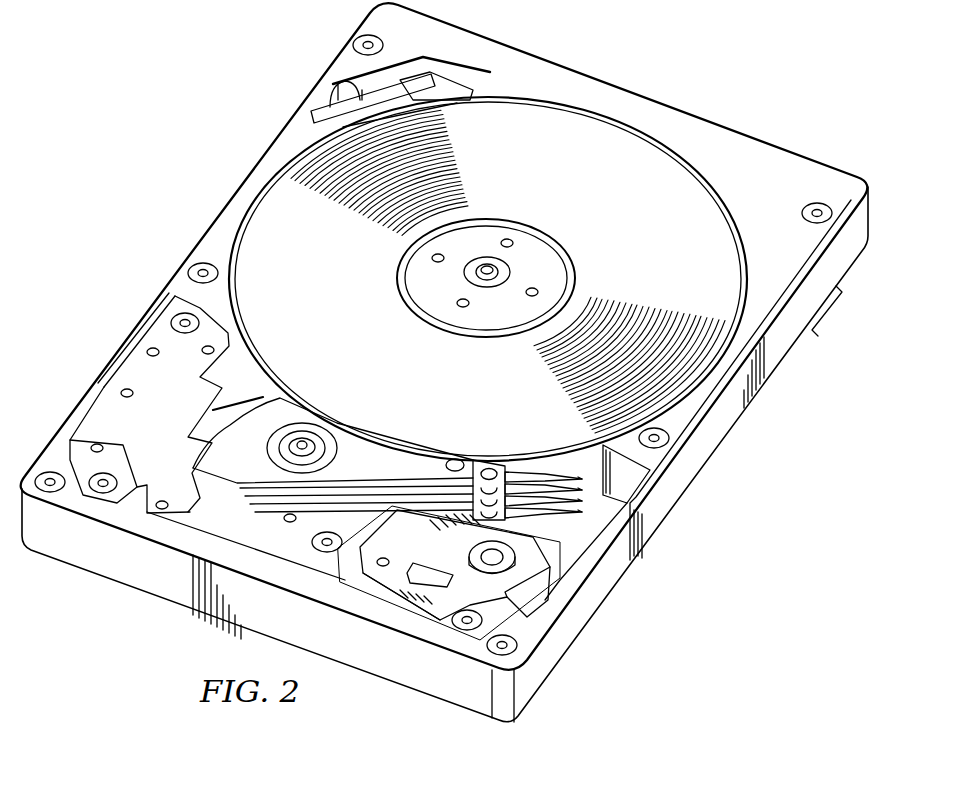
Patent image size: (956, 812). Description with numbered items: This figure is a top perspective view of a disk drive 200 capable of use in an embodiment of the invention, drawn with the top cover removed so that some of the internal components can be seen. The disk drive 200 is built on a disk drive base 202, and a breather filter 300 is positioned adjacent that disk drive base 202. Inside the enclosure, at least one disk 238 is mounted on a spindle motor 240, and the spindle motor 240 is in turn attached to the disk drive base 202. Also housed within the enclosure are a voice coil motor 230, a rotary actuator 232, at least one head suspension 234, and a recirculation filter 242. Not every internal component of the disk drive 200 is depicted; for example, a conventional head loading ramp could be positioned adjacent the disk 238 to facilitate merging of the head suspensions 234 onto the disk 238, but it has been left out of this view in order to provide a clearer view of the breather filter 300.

The disk drive 200 is at (652, 76).
The disk drive base 202 is at (770, 350).
The voice coil motor 230 is at (145, 368).
The rotary actuator 232 is at (378, 455).
The head suspension 234 is at (536, 477).
The disk 238 is at (339, 288).
The spindle motor 240 is at (488, 238).
The recirculation filter 242 is at (362, 100).
The breather filter 300 is at (556, 545).